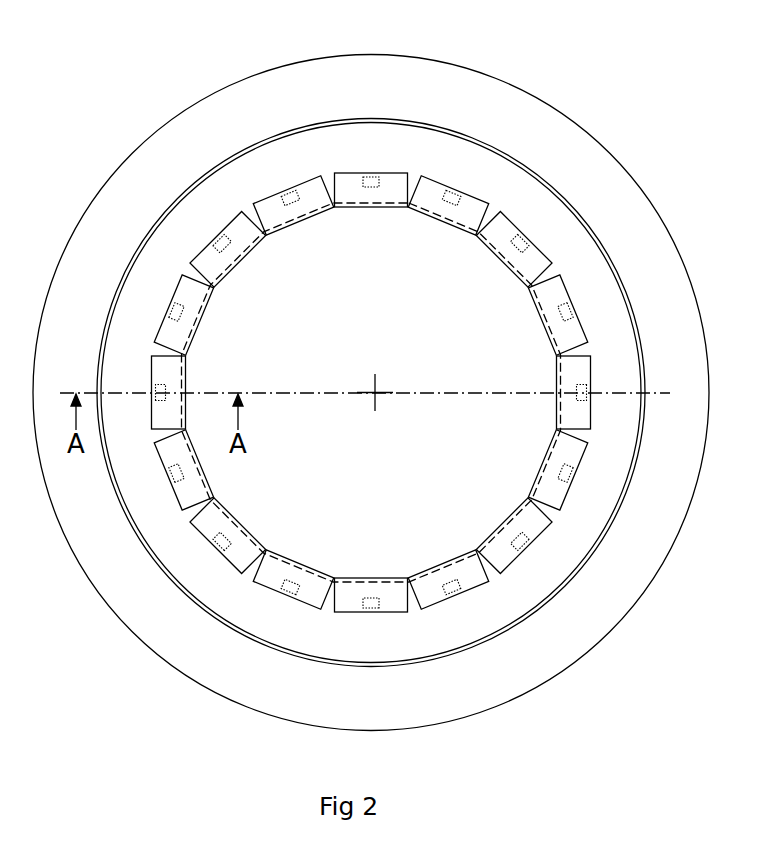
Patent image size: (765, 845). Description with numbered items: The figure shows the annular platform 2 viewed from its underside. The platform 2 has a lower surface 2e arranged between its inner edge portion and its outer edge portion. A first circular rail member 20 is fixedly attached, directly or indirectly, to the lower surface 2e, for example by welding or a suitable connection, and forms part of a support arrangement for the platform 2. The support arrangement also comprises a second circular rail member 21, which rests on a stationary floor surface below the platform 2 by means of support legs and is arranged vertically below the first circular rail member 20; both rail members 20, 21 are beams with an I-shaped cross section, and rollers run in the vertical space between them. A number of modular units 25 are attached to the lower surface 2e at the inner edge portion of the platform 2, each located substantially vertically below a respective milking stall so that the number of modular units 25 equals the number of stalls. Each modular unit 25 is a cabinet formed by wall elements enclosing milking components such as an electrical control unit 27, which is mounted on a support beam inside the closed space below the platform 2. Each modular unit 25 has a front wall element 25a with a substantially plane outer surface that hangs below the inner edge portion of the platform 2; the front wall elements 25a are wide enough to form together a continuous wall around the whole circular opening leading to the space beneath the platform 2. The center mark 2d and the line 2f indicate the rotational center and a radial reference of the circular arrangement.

The platform 2 is at (120, 192).
The second circular rail member 21 is at (371, 367).
The lower surface 2e is at (548, 140).
The first circular rail member 20 is at (319, 125).
The rotation center 2d is at (373, 390).
The radial reference line 2f is at (482, 392).
The modular unit 25 is at (553, 492).
The front wall element 25a is at (540, 478).
The electrical control unit 27 is at (587, 397).